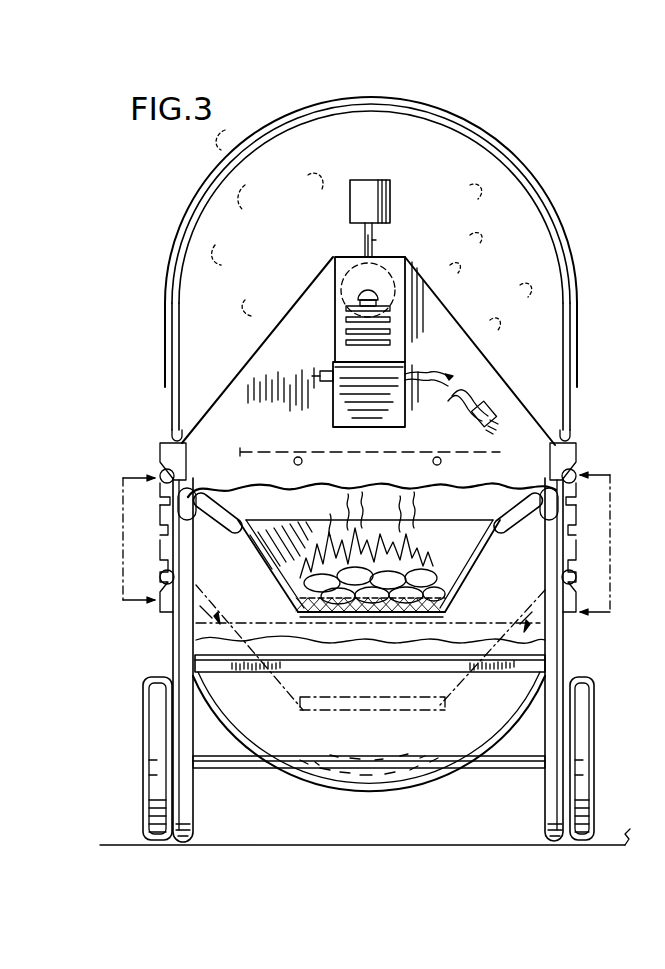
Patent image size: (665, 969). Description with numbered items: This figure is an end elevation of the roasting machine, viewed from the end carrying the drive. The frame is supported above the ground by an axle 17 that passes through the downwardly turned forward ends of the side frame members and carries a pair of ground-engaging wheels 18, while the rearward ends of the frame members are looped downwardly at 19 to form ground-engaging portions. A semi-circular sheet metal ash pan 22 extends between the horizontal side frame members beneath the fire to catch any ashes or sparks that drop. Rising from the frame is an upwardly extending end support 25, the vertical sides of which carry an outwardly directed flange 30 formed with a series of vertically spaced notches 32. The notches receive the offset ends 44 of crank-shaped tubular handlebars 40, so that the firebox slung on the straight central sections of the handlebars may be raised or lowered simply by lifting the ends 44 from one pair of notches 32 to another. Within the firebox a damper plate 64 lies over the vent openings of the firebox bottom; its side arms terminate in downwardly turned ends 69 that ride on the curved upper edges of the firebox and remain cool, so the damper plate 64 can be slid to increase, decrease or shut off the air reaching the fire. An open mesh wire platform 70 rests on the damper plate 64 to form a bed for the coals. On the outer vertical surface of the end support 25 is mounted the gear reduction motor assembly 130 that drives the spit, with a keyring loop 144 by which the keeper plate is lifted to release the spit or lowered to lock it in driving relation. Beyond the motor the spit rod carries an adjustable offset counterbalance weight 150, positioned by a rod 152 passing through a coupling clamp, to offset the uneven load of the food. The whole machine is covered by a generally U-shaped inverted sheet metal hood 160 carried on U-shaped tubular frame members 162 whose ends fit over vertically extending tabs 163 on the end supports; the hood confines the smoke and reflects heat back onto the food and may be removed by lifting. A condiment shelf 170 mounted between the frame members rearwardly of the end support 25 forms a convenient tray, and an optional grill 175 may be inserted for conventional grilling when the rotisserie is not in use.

The hood 160 is at (470, 118).
The tubular frame members 162 is at (380, 112).
The counterbalance weight 150 is at (350, 191).
The rod 152 is at (364, 236).
The keyring loop 144 is at (378, 240).
The gear reduction motor assembly 130 is at (405, 321).
The end support 25 is at (495, 390).
The grill 175 is at (290, 448).
The tabs 163 is at (586, 428).
The flange 30 is at (152, 526).
The notches 32 is at (160, 506).
The offset ends 44 is at (160, 566).
The arm ends 69 is at (246, 511).
The damper plate 64 is at (472, 544).
The handlebars 40 is at (520, 548).
The open mesh wire platform 70 is at (446, 608).
The condiment shelf 170 is at (558, 651).
The ash pan 22 is at (396, 784).
The axle 17 is at (221, 768).
The wheels 18 is at (596, 710).
The ground-engaging portions 19 is at (193, 834).